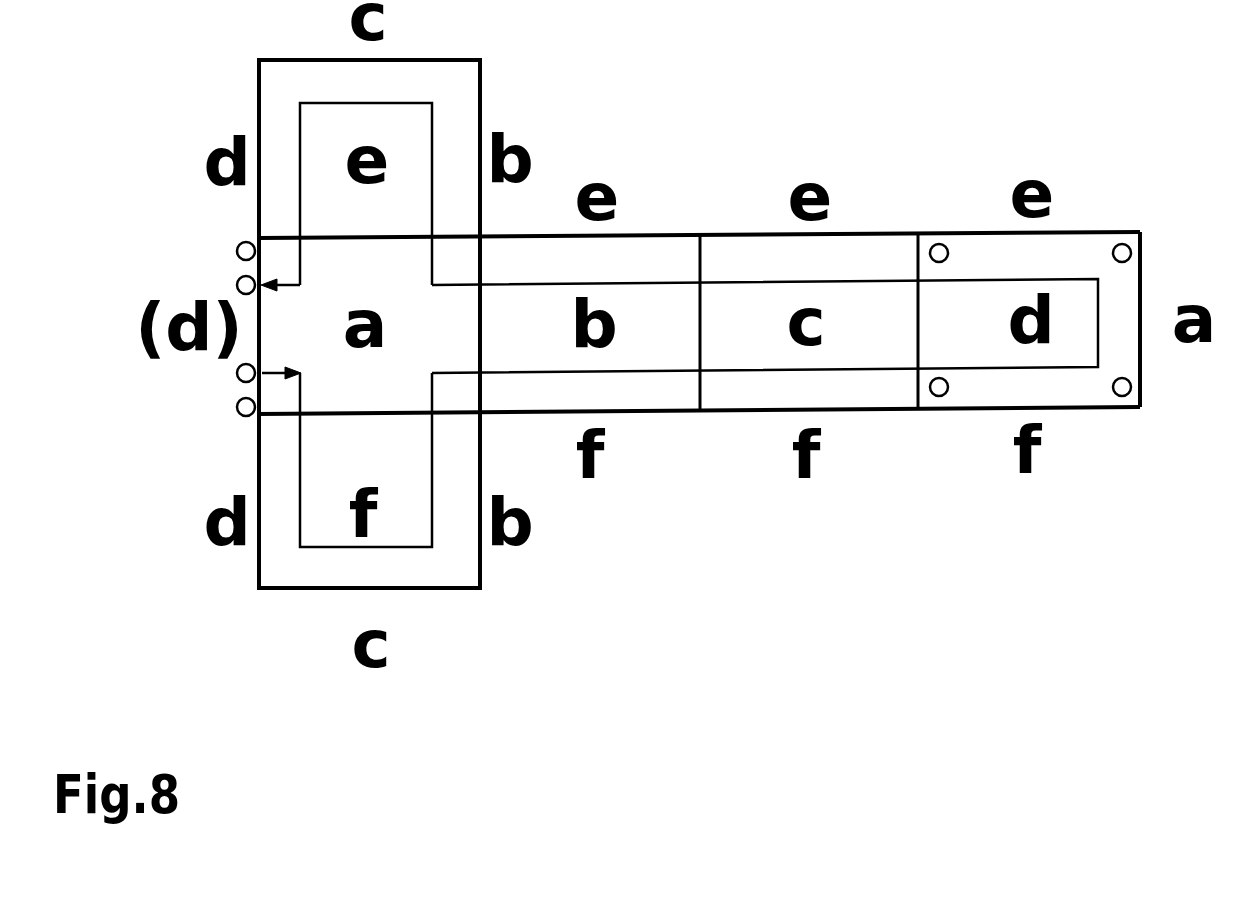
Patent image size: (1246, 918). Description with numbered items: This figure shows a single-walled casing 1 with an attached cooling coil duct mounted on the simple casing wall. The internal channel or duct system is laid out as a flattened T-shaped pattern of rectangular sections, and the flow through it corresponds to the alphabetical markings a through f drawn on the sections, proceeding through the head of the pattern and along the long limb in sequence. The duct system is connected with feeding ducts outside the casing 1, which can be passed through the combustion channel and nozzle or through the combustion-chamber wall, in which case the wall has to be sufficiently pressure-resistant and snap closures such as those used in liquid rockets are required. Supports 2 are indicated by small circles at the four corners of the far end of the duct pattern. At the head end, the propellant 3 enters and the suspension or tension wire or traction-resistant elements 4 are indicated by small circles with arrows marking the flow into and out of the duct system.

The casing 1 is at (625, 377).
The support 2 is at (945, 245).
The propellant 3 is at (240, 380).
The suspension/tension wire/traction-resistant elements 4 is at (240, 245).